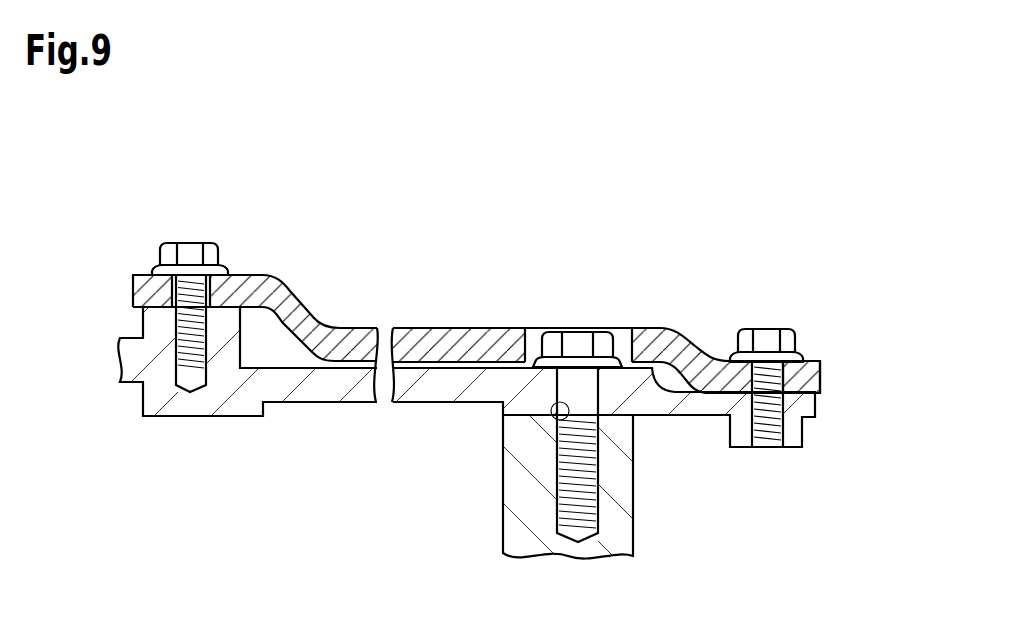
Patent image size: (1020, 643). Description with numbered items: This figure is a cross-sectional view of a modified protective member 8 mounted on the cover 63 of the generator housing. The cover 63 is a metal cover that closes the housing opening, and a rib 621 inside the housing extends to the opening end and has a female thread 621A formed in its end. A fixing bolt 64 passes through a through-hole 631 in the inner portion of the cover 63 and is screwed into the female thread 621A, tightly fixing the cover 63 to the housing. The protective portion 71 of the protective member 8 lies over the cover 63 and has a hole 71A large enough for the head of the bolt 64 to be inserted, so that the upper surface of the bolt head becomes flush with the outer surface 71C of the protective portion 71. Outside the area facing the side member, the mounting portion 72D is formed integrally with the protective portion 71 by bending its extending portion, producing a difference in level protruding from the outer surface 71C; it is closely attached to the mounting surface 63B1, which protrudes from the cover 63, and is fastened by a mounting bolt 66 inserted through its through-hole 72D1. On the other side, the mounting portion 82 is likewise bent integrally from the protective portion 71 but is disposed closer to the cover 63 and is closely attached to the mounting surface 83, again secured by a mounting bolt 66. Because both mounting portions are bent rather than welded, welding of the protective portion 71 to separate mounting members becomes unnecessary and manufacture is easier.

The protective member 8 is at (497, 293).
The cover 63 is at (350, 390).
The mounting surface 63B1 is at (228, 296).
The bolt 64 is at (575, 343).
The bolt 66 is at (192, 252).
The protective portion 71 is at (615, 311).
The hole 71A is at (535, 332).
The outer surface 71C is at (445, 327).
The mounting portion 72D is at (133, 288).
The through-hole 72D1 is at (187, 297).
The mounting portion 82 is at (808, 370).
The mounting surface 83 is at (733, 390).
The rib 621 is at (618, 515).
The female thread 621A is at (583, 482).
The through-hole 631 is at (560, 425).